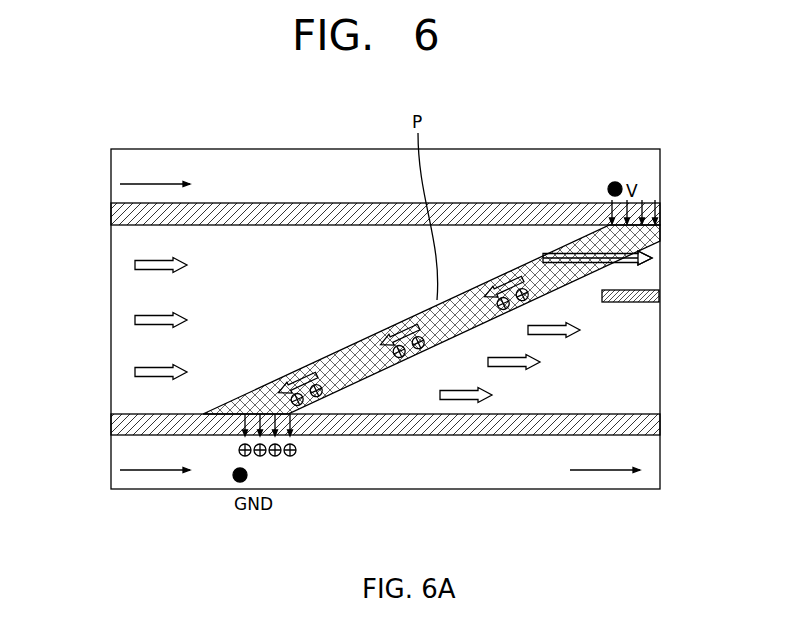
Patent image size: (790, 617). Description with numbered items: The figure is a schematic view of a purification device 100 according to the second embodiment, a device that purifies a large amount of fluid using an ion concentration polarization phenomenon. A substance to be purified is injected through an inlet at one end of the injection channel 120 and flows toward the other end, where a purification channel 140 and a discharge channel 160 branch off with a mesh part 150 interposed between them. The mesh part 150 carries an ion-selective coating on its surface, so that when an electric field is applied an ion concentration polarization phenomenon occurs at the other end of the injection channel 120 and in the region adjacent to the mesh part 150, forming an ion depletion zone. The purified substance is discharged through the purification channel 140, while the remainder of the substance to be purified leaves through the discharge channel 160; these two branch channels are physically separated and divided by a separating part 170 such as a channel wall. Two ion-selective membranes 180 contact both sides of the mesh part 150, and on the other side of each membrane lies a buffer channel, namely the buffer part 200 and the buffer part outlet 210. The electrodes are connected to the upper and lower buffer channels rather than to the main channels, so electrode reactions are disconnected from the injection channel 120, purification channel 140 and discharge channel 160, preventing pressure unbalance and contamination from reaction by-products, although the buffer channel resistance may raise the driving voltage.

The purification device 100 is at (118, 117).
The injection channel 120 is at (128, 238).
The purification channel 140 is at (638, 350).
The mesh part 150 is at (367, 373).
The discharge channel 160 is at (565, 284).
The separating part 170 is at (660, 297).
The ion-selective membrane 180 is at (116, 212).
The buffer part 200 is at (135, 182).
The buffer part outlet 210 is at (615, 482).